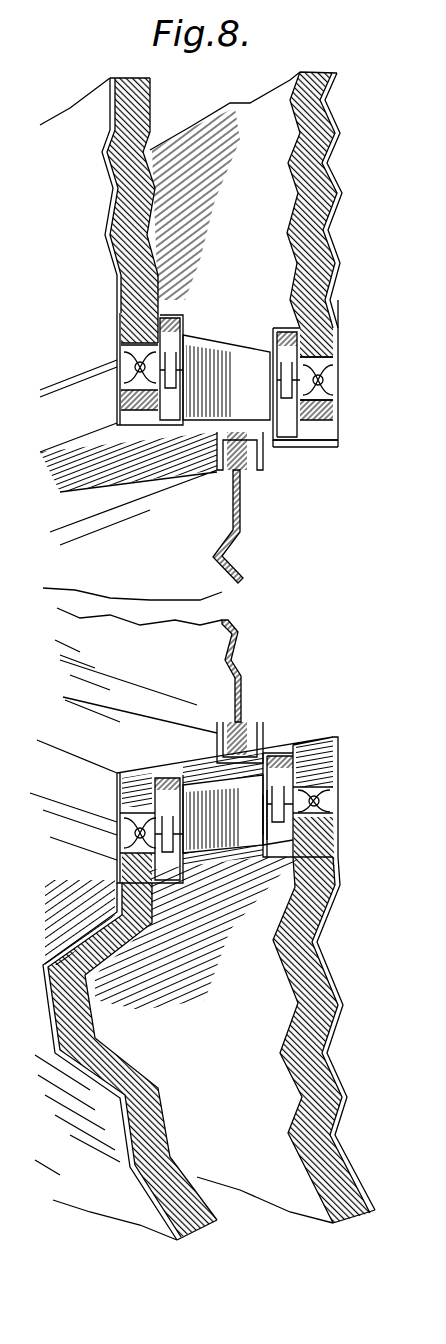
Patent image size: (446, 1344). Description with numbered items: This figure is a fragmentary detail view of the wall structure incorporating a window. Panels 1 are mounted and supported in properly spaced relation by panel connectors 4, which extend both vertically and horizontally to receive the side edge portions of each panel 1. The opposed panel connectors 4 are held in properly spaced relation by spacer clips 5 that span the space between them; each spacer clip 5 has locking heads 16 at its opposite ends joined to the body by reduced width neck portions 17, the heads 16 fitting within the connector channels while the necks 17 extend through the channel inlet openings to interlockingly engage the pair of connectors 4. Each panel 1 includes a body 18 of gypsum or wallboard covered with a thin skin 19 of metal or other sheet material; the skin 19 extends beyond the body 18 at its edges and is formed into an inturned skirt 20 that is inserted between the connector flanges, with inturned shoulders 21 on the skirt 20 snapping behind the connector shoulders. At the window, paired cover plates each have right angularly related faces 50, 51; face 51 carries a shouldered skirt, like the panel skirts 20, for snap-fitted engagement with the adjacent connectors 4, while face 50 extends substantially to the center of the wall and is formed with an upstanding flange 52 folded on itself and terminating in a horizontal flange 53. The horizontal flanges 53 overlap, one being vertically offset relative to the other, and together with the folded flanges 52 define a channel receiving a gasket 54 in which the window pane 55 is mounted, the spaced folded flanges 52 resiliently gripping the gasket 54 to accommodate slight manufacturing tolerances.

The panel 1 is at (62, 188).
The panel connector 4 is at (170, 318).
The spacer clip 5 is at (256, 366).
The locking head 16 is at (282, 820).
The neck portion 17 is at (268, 803).
The panel body 18 is at (322, 276).
The skin 19 is at (339, 220).
The inturned skirt 20 is at (333, 384).
The inturned shoulder 21 is at (333, 406).
The cover plate face 50 is at (312, 452).
The cover plate face 51 is at (338, 430).
The upstanding flange 52 is at (262, 742).
The horizontal flange 53 is at (258, 450).
The gasket 54 is at (242, 730).
The window pane 55 is at (242, 578).